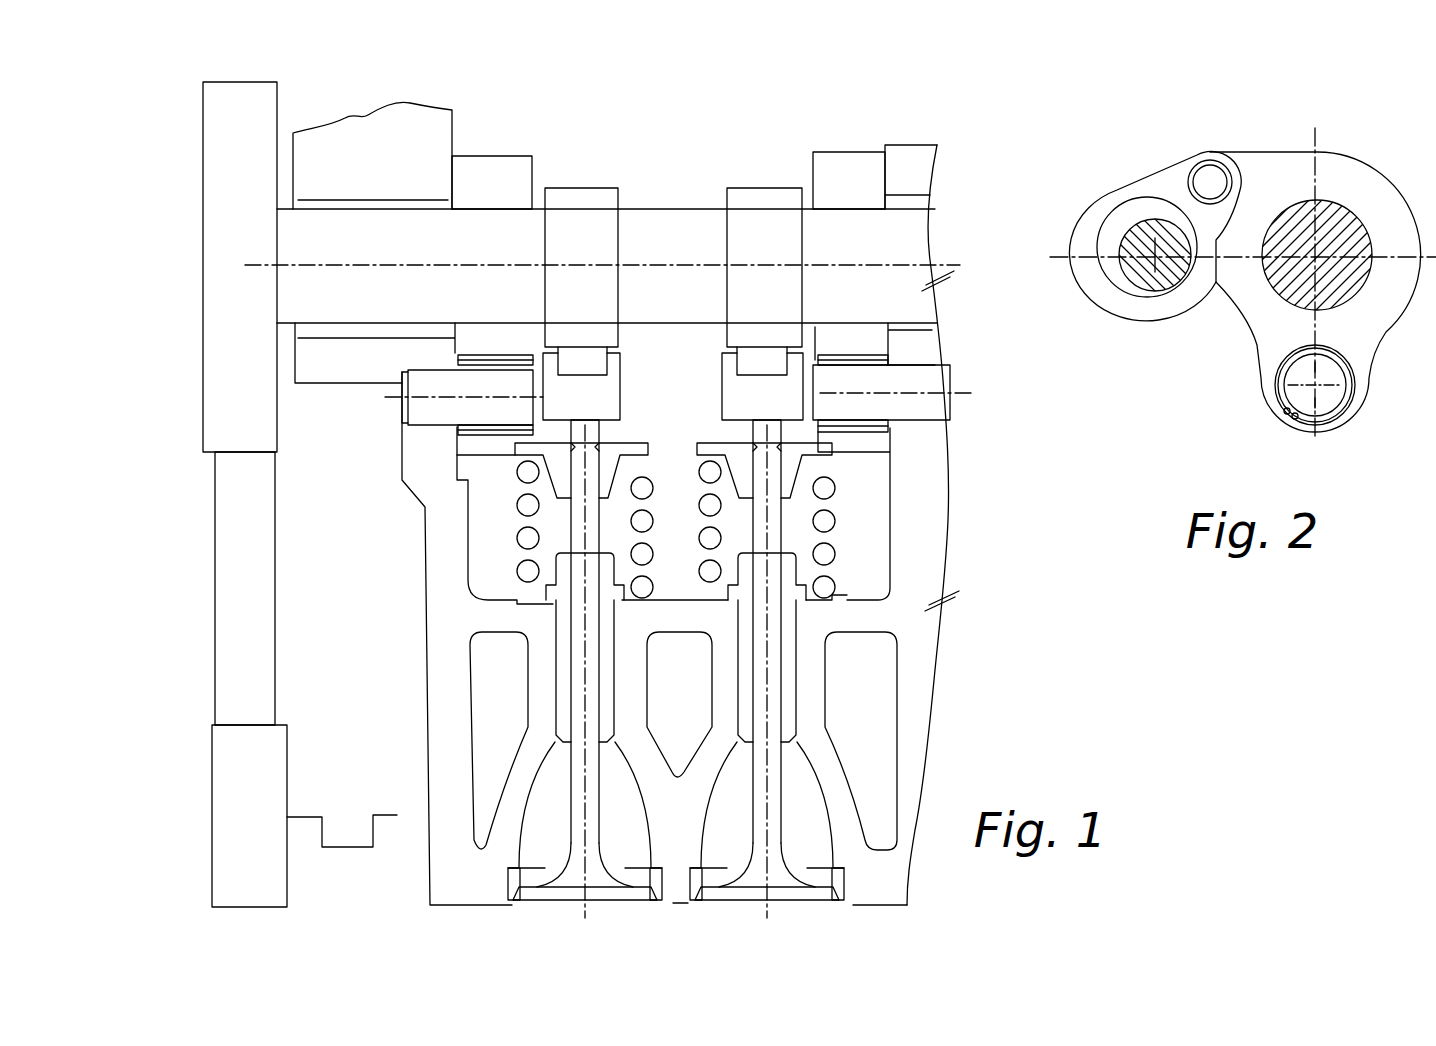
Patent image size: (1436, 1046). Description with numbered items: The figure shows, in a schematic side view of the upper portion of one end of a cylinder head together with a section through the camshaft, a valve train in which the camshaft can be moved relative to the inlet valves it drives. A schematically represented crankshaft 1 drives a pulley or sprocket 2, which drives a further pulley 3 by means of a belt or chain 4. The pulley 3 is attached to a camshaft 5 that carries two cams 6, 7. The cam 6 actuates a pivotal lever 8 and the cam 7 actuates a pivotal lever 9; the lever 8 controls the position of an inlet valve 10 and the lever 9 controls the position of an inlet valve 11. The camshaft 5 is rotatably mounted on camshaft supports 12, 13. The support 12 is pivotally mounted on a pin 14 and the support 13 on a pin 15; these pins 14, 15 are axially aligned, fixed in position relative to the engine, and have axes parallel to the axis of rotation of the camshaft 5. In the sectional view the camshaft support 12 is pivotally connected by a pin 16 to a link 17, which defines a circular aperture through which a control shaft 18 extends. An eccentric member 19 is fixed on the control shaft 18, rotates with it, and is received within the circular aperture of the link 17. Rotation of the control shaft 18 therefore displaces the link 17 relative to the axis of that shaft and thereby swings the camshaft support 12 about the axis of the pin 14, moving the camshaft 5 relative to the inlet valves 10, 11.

In FIG. 1, the crankshaft 1 is at (335, 850).
In FIG. 1, the pulley or sprocket 2 is at (233, 812).
In FIG. 1, the pulley 3 is at (217, 277).
In FIG. 1, the belt or chain 4 is at (228, 623).
In FIG. 1, the camshaft 5 is at (293, 247).
In FIG. 2, the camshaft 5 is at (1328, 228).
In FIG. 1, the cam 6 is at (602, 222).
In FIG. 1, the cam 7 is at (780, 206).
In FIG. 1, the pivotal lever 8 is at (610, 409).
In FIG. 1, the pivotal lever 9 is at (750, 391).
In FIG. 1, the inlet valve 10 is at (605, 872).
In FIG. 1, the inlet valve 11 is at (780, 870).
In FIG. 1, the camshaft support 12 is at (514, 186).
In FIG. 2, the camshaft support 12 is at (1283, 172).
In FIG. 1, the camshaft support 13 is at (860, 166).
In FIG. 1, the pin 14 is at (463, 410).
In FIG. 2, the pin 14 is at (1303, 395).
In FIG. 1, the pin 15 is at (927, 407).
In FIG. 2, the pin 16 is at (1202, 178).
In FIG. 2, the link 17 is at (1150, 175).
In FIG. 2, the control shaft 18 is at (1158, 278).
In FIG. 2, the eccentric member 19 is at (1125, 228).